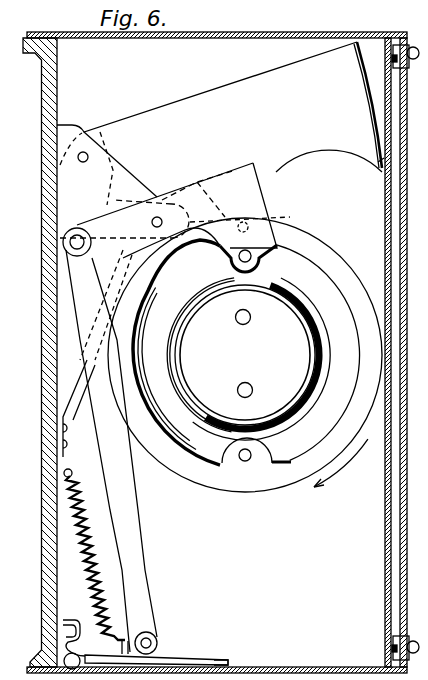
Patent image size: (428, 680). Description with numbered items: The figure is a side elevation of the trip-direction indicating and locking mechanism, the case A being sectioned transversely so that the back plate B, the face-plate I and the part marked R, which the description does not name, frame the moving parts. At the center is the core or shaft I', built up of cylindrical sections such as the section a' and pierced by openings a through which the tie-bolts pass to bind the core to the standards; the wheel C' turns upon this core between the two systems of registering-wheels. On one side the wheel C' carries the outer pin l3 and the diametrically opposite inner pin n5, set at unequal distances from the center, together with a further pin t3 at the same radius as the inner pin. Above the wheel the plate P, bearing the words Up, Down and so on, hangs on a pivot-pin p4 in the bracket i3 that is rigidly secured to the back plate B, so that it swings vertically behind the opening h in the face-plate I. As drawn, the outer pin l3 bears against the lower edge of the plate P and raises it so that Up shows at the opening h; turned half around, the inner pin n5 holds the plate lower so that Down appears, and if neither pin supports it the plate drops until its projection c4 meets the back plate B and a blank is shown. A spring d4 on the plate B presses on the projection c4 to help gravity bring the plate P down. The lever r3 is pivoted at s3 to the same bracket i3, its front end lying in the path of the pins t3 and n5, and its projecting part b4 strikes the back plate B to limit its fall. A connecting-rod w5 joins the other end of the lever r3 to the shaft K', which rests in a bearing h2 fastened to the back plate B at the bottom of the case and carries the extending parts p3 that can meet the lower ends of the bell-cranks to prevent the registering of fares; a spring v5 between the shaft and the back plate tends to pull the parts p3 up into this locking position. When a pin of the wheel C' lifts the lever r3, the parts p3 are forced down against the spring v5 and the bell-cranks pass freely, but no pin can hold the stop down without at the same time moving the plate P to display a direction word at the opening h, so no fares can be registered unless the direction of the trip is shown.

The case A is at (217, 26).
The back plate B is at (215, 355).
The guide bar R is at (403, 352).
The face-plate I is at (395, 352).
The plate P is at (219, 119).
The opening h is at (380, 161).
The pivot s3 is at (152, 222).
The lever r3 is at (219, 205).
The outer pin l3 is at (250, 226).
The pin t3 is at (232, 257).
The bracket i3 is at (70, 129).
The pivot-pin p4 is at (86, 161).
The projection c4 is at (87, 249).
The projecting part b4 is at (117, 335).
The spring d4 is at (78, 395).
The connecting-rod w5 is at (96, 561).
The spring v5 is at (94, 588).
The bearing h2 is at (80, 646).
The locking device K' is at (156, 648).
The extending parts p3 is at (216, 662).
The wheel C' is at (245, 355).
The cylindrical section a' is at (248, 359).
The core or shaft I' is at (245, 355).
The openings a is at (249, 353).
The inner pin n5 is at (244, 461).